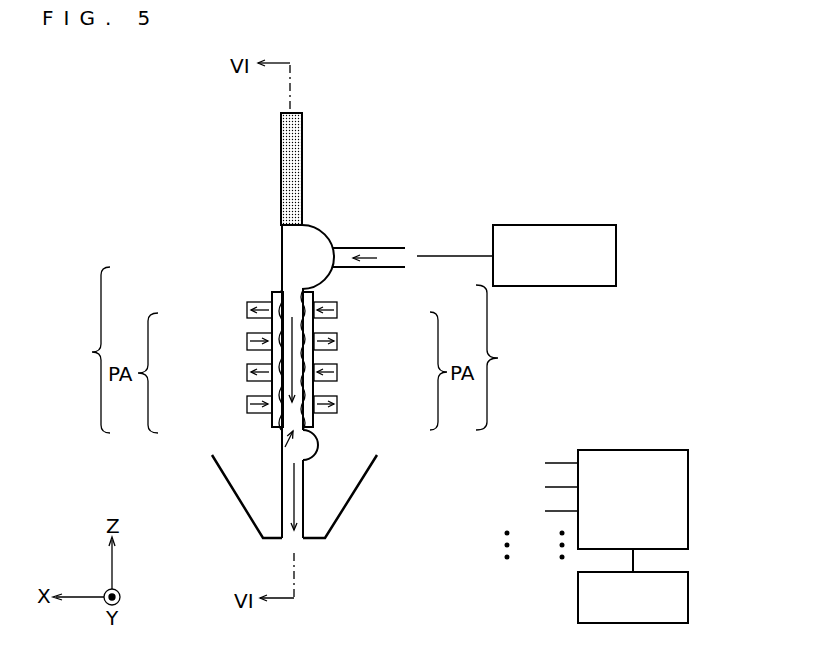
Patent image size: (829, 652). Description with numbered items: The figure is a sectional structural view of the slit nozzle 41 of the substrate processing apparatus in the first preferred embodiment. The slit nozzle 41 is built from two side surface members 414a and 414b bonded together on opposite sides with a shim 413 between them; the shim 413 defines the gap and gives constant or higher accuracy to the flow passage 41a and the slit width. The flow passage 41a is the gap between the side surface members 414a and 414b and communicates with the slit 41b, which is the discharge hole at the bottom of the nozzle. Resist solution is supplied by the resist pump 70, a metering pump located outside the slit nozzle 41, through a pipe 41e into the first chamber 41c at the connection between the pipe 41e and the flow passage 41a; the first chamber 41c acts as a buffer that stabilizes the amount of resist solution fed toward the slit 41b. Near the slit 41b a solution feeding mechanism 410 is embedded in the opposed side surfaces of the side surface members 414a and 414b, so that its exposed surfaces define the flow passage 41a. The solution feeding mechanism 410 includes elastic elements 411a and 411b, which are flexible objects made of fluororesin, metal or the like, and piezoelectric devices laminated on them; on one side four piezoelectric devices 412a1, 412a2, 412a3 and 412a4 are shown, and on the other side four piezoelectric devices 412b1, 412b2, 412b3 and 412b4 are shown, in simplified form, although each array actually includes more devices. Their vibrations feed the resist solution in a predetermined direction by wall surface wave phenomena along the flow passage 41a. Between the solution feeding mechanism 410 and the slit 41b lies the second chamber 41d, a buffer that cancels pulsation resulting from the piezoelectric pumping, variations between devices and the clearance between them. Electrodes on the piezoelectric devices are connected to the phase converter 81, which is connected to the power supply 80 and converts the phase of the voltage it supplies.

The slit nozzle 41 is at (417, 153).
The shim 413 is at (282, 175).
The first chamber 41c is at (320, 243).
The pipe 41e is at (392, 250).
The resist pump 70 is at (543, 225).
The elastic element 411a is at (276, 291).
The elastic element 411b is at (312, 292).
The piezoelectric device 412a1 is at (247, 317).
The piezoelectric device 412a2 is at (247, 348).
The piezoelectric device 412a3 is at (247, 380).
The piezoelectric device 412a4 is at (247, 412).
The piezoelectric device 412b1 is at (337, 315).
The piezoelectric device 412b2 is at (337, 347).
The piezoelectric device 412b3 is at (337, 378).
The piezoelectric device 412b4 is at (337, 410).
The solution feeding mechanism 410 is at (291, 350).
The flow passage 41a is at (282, 448).
The second chamber 41d is at (317, 449).
The side surface member 414a is at (253, 518).
The side surface member 414b is at (332, 517).
The slit 41b is at (297, 533).
The phase converter 81 is at (689, 500).
The power supply 80 is at (689, 600).